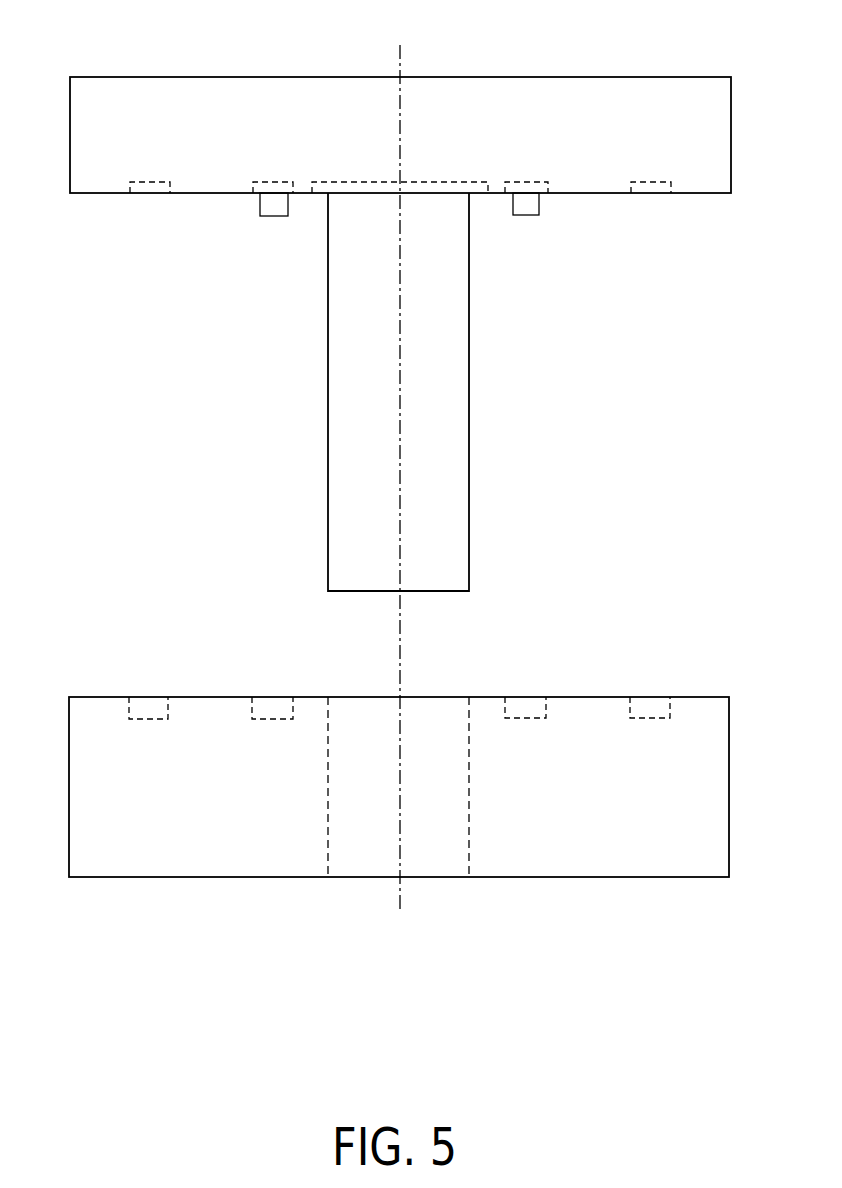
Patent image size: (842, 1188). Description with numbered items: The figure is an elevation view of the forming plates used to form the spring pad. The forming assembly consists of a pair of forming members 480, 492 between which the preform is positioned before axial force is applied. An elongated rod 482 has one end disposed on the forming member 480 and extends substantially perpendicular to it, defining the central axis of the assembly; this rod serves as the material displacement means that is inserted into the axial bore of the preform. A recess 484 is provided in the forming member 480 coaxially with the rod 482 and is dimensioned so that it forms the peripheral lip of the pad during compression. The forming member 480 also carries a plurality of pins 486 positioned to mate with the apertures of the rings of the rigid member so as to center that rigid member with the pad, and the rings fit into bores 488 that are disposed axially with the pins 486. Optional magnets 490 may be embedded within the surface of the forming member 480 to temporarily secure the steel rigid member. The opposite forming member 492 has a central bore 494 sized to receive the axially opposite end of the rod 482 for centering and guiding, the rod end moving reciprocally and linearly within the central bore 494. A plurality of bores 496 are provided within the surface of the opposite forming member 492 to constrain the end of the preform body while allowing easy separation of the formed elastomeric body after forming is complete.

The forming member 480 is at (650, 88).
The elongated rod 482 is at (328, 390).
The recess 484 is at (318, 193).
The pins 486 is at (272, 216).
The bores 488 is at (524, 182).
The magnets 490 is at (150, 193).
The opposite forming member 492 is at (654, 842).
The central bore 494 is at (328, 838).
The bores 496 is at (272, 708).